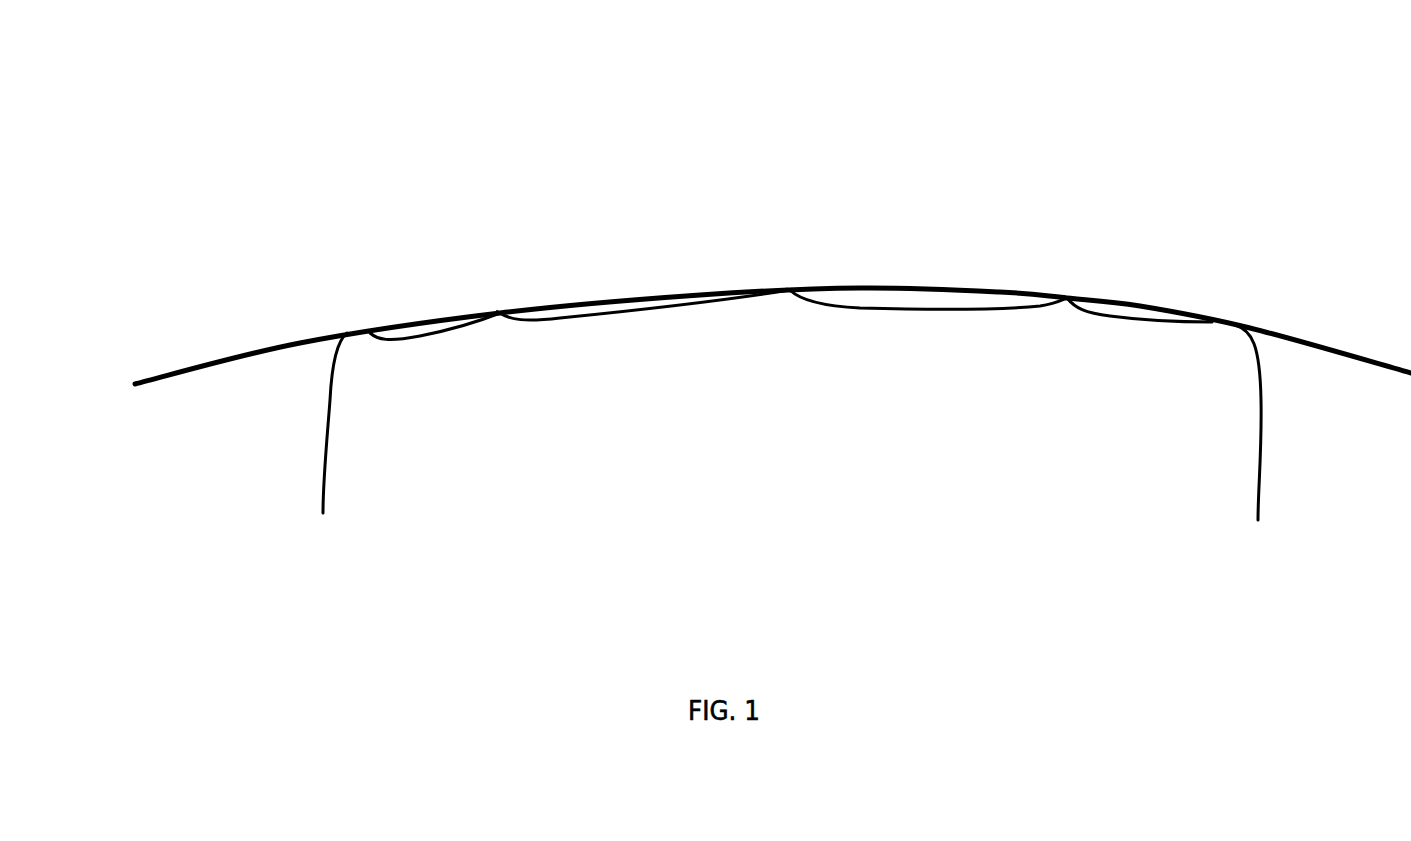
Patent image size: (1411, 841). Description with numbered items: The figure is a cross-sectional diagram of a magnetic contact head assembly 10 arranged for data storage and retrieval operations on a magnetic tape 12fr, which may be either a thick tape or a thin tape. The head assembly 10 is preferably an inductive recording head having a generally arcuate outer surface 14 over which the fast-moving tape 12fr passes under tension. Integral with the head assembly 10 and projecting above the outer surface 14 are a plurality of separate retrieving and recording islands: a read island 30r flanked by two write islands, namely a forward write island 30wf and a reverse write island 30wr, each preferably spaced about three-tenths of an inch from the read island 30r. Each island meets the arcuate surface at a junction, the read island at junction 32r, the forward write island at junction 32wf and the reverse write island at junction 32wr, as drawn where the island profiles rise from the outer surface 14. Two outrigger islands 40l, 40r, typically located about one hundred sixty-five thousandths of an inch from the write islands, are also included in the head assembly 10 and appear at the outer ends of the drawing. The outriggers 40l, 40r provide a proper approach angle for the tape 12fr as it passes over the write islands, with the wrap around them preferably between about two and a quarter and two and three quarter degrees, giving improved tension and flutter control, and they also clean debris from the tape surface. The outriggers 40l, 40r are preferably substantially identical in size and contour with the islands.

The magnetic contact head assembly 10 is at (193, 76).
The magnetic tape 12fr is at (152, 376).
The arcuate outer surface 14 is at (908, 308).
The reverse write island 30wr is at (500, 316).
The read island 30r is at (790, 293).
The forward write island 30wf is at (1070, 305).
The rear wheel-well junction 32wr is at (500, 312).
The rear junction 32r is at (790, 290).
The front wheel-well junction 32wf is at (1067, 298).
The outrigger island 40l is at (343, 348).
The outrigger island 40r is at (1222, 328).